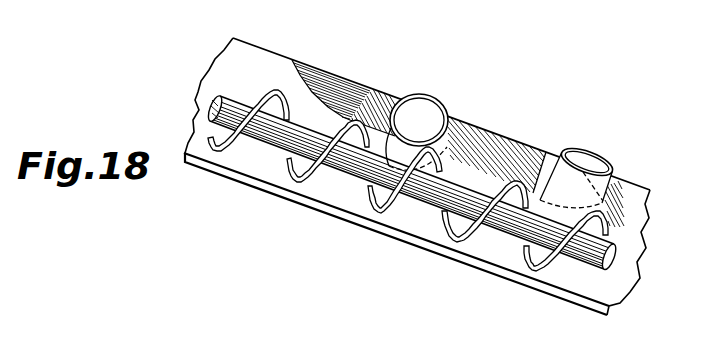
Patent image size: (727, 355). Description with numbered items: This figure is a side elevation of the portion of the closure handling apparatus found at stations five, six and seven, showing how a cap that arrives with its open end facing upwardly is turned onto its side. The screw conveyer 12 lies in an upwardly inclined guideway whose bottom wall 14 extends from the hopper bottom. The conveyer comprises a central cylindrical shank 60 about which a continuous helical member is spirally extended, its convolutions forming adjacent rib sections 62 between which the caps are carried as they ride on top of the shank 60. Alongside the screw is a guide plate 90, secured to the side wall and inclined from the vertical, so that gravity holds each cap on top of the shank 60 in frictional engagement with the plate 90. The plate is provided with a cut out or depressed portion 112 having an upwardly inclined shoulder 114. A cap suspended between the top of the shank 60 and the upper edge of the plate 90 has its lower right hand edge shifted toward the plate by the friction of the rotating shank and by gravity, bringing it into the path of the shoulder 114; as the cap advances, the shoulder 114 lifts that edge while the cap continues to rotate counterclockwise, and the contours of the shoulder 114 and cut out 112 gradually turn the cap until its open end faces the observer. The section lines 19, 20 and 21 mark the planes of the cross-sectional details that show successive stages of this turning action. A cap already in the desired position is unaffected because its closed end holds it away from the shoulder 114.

The screw conveyer 12 is at (243, 88).
The bottom wall 14 is at (508, 275).
The section line 19— 19 is at (593, 123).
The section line 20— 20 is at (465, 107).
The section line 21— 21 is at (346, 68).
The shank 60 is at (263, 158).
The rib sections 62 is at (279, 88).
The guide plate 90 is at (640, 213).
The cut out portion 112 is at (492, 132).
The shoulder 114 is at (395, 236).